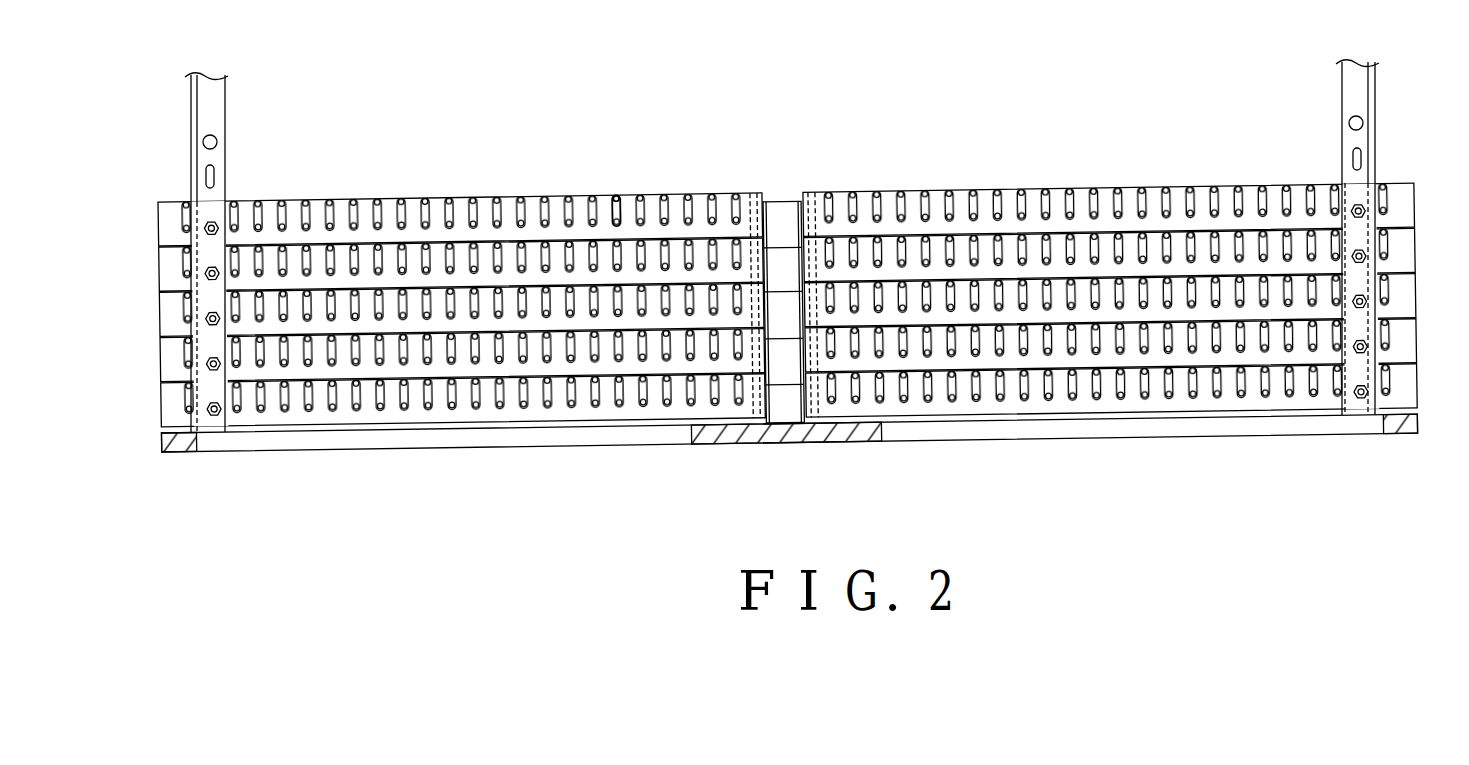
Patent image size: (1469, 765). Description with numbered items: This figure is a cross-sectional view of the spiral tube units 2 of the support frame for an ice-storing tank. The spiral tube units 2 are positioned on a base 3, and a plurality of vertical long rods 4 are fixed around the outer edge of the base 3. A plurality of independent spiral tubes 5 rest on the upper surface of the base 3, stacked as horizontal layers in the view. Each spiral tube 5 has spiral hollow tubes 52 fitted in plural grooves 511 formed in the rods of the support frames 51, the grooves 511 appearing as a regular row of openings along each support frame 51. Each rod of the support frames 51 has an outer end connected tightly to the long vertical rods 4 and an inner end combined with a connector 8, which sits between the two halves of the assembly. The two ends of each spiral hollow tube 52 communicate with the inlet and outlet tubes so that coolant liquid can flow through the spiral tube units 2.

The spiral tube units 2 is at (1436, 128).
The base 3 is at (835, 432).
The vertical long rods 4 is at (213, 112).
The spiral tubes 5 is at (147, 232).
The connector 8 is at (781, 213).
The support frames 51 is at (553, 207).
The grooves 511 is at (613, 200).
The spiral hollow tubes 52 is at (616, 200).